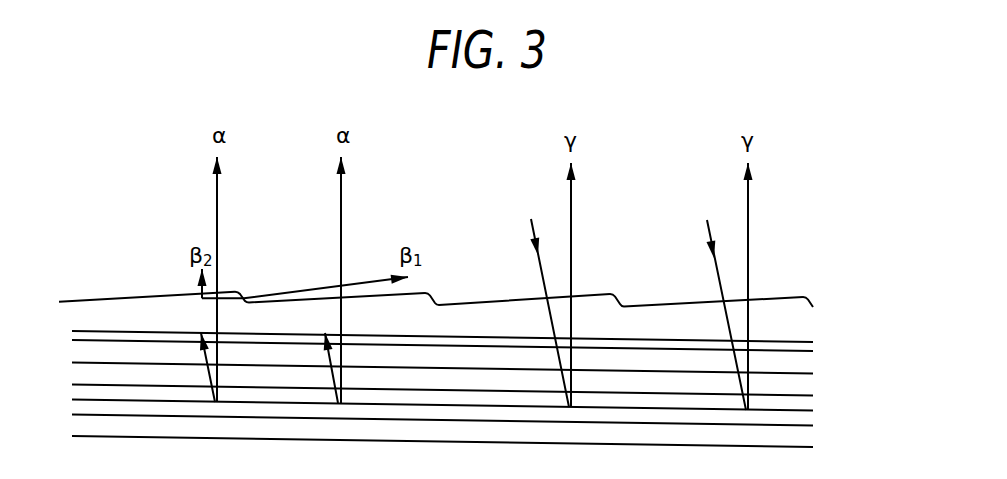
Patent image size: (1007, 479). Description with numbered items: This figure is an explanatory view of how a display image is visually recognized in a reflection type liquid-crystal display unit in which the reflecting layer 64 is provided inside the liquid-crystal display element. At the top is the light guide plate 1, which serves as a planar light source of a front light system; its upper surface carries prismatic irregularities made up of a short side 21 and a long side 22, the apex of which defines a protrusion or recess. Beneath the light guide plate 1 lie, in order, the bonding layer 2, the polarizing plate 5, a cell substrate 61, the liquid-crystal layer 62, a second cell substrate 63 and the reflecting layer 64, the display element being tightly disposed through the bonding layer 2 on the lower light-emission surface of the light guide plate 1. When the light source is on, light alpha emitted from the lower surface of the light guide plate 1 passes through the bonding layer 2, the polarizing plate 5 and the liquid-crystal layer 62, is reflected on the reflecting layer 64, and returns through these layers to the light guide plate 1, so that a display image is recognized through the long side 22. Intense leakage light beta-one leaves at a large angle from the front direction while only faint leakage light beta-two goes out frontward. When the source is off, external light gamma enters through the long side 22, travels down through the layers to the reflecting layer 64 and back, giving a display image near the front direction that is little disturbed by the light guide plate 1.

The light guide plate 1 is at (800, 323).
The bonding layer 2 is at (800, 343).
The polarizing plate 5 is at (800, 367).
The short side 21 is at (433, 294).
The long side 22 is at (112, 298).
The cell substrate 61 is at (798, 380).
The liquid-crystal layer 62 is at (800, 402).
The cell substrate 63 is at (798, 440).
The reflecting layer 64 is at (798, 415).